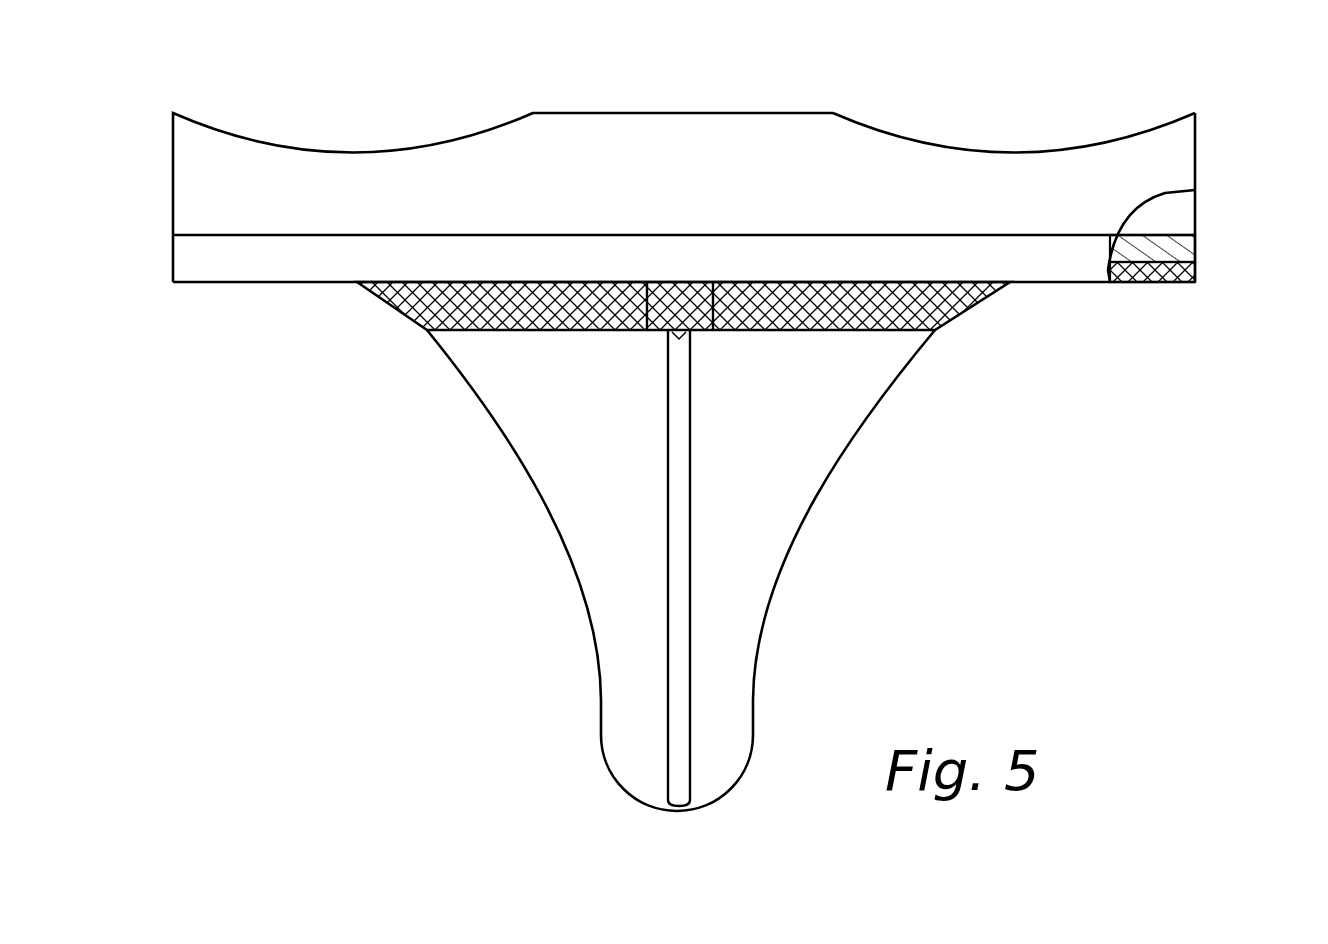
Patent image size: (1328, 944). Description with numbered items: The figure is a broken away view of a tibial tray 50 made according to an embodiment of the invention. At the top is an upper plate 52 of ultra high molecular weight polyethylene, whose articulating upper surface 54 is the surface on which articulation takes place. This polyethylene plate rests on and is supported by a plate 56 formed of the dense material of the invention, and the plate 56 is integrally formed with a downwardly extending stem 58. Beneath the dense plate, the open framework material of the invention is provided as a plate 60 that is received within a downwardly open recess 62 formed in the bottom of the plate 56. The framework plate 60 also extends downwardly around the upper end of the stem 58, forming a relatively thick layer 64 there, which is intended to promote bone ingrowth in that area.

The tibial tray 50 is at (882, 452).
The upper plate 52 is at (588, 150).
The articulating upper surface 54 is at (930, 140).
The plate 56 is at (257, 257).
The stem 58 is at (598, 695).
The plate 60 is at (1142, 282).
The downwardly open recess 62 is at (1183, 267).
The relatively thick layer 64 is at (400, 315).